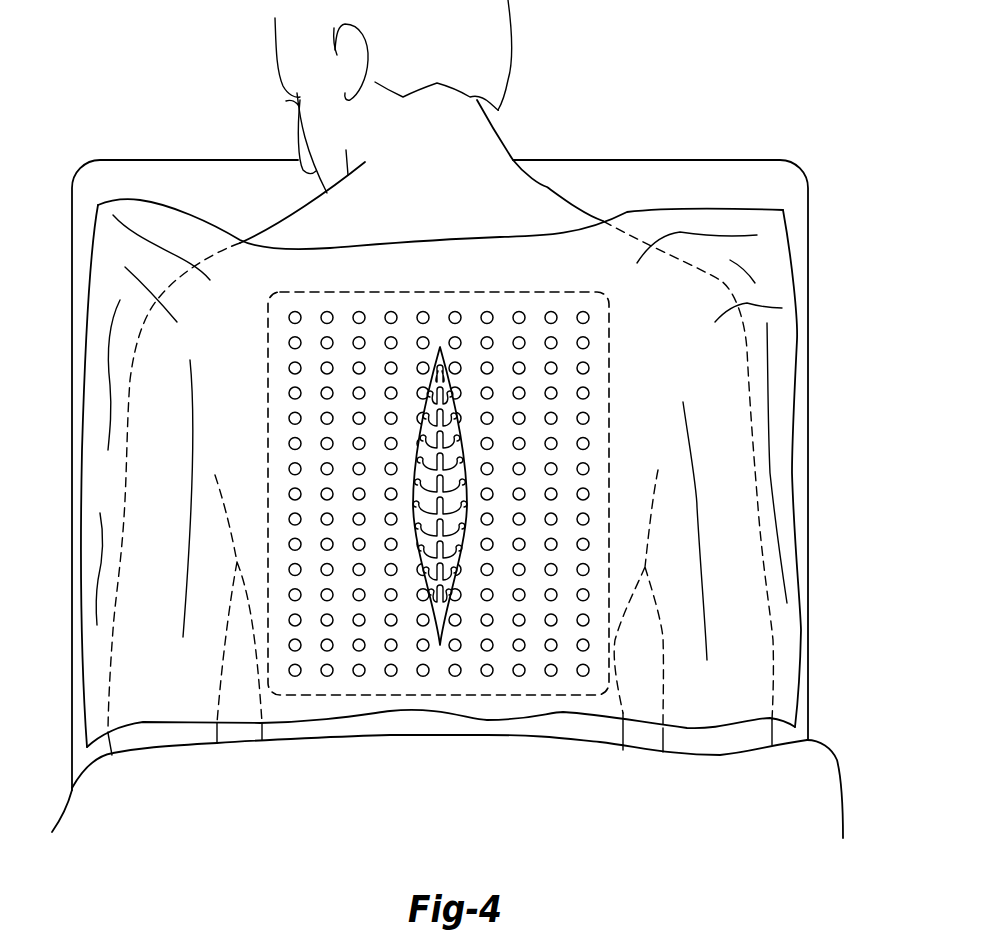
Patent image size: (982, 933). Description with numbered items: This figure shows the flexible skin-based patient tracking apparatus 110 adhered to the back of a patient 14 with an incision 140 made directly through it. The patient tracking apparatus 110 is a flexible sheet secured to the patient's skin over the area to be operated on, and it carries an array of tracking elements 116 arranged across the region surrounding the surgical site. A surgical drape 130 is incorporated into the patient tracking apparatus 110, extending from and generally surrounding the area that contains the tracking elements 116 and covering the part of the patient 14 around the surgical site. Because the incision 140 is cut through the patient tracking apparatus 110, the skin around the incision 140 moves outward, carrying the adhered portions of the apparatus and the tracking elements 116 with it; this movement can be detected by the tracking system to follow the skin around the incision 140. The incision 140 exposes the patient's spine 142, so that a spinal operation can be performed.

The patient 14 is at (447, 140).
The patient tracking apparatus 110 is at (547, 186).
The tracking elements 116 is at (520, 343).
The surgical drape 130 is at (762, 226).
The incision 140 is at (340, 452).
The spine 142 is at (450, 465).